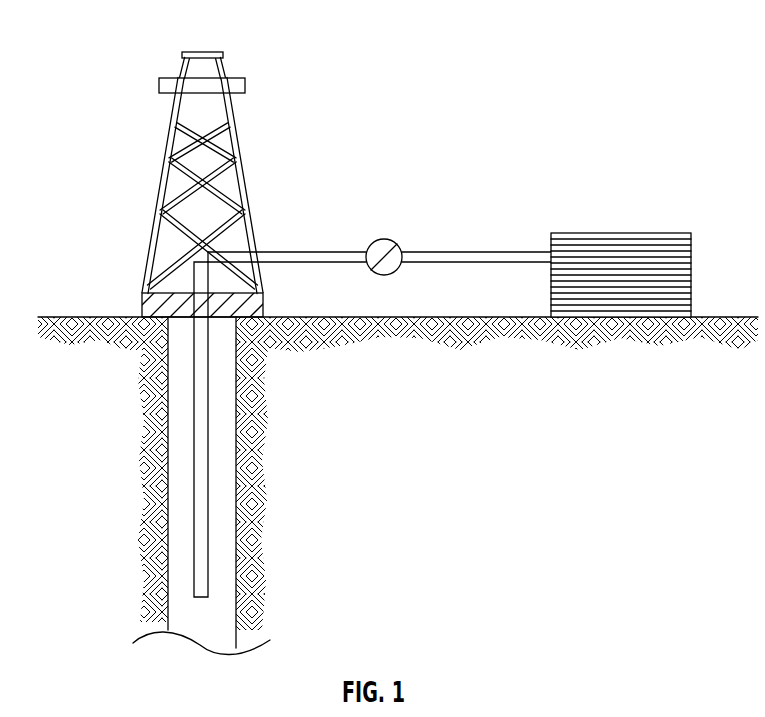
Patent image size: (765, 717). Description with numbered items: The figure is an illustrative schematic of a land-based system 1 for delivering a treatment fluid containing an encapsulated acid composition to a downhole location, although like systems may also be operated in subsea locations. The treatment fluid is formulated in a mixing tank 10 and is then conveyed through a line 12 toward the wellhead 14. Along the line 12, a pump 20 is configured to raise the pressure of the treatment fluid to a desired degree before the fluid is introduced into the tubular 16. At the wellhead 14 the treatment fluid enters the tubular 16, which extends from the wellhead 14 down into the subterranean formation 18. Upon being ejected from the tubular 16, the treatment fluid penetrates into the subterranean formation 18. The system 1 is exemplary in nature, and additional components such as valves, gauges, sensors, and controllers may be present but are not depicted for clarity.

The system 1 is at (83, 43).
The mixing tank 10 is at (658, 233).
The line 12 is at (295, 251).
The wellhead 14 is at (140, 303).
The tubular 16 is at (208, 425).
The subterranean formation 18 is at (86, 429).
The pump 20 is at (383, 239).